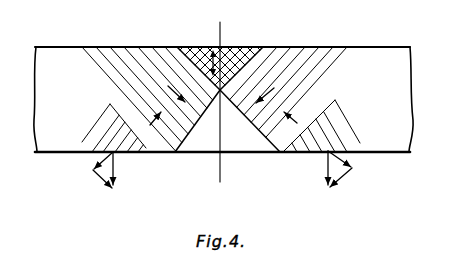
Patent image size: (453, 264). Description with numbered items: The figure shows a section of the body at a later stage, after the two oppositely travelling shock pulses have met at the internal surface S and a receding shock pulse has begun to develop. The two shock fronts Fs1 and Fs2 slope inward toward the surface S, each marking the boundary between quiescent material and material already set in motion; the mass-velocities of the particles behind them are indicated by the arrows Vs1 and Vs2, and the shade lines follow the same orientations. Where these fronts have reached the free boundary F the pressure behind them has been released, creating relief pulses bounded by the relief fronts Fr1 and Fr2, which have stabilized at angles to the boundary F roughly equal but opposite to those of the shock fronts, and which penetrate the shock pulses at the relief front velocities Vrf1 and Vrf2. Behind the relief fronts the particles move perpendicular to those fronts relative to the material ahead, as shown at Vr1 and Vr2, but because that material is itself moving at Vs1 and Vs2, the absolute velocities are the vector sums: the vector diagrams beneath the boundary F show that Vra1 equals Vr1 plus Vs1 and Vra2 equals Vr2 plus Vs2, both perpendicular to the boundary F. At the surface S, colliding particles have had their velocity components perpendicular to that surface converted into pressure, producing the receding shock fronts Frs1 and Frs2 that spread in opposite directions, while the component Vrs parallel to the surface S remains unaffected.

The surface S is at (221, 39).
The mass-velocity in receding shock pulse Vrs is at (211, 55).
The receding shock front Frs1 is at (185, 59).
The receding shock front Frs2 is at (256, 58).
The shock front Fs1 is at (198, 114).
The shock front Fs2 is at (249, 118).
The mass-velocity behind shock front Vs1 is at (172, 95).
The mass-velocity behind shock front Vs2 is at (272, 93).
The relief front velocity Vrf1 is at (150, 124).
The relief front velocity Vrf2 is at (297, 123).
The absolute mass-velocity behind relief front Vra1 is at (116, 166).
The absolute mass-velocity behind relief front Vra2 is at (327, 167).
The mass-velocity behind relief front Vr1 is at (98, 161).
The mass-velocity behind relief front Vr2 is at (350, 163).
The relief front Fr1 is at (174, 142).
The relief front Fr2 is at (283, 140).
The free boundary F is at (164, 141).